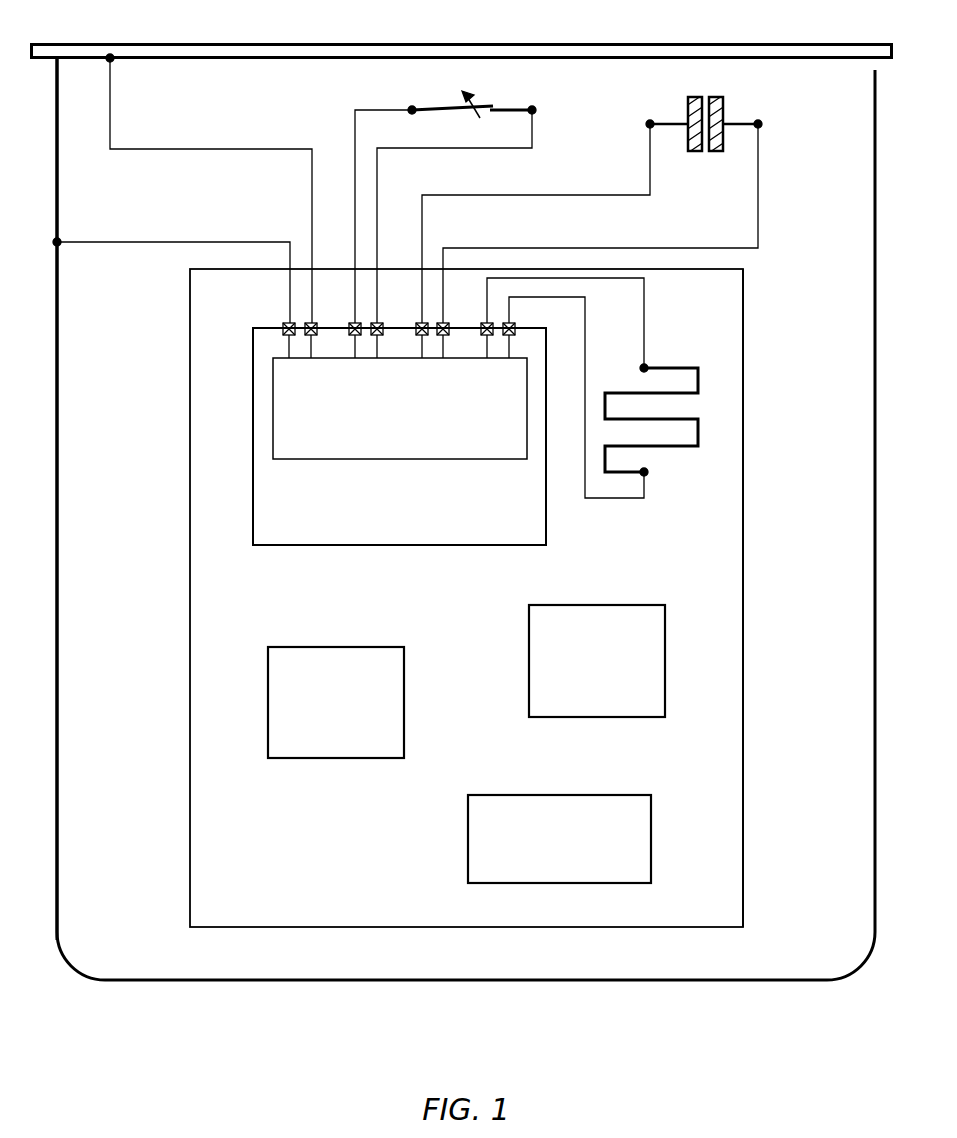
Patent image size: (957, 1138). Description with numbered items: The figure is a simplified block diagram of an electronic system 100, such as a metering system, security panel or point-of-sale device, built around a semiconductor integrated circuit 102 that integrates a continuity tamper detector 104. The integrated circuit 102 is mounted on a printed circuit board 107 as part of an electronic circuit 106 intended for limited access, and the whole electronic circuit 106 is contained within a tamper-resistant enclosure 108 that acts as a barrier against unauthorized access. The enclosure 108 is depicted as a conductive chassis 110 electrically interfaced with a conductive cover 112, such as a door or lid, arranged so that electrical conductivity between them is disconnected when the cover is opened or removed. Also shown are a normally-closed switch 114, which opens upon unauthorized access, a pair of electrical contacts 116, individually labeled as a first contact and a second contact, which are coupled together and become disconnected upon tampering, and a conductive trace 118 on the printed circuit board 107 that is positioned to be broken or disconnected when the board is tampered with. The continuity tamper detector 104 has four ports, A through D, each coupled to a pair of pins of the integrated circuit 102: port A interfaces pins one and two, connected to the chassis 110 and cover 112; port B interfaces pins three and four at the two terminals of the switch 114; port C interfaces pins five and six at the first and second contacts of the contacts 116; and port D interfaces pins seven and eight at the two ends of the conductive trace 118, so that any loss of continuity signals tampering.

The electronic system 100 is at (441, 29).
The integrated circuit 102 is at (389, 521).
The continuity tamper detector 104 is at (470, 447).
The electronic circuit 106 is at (785, 379).
The printed circuit board 107 is at (744, 540).
The enclosure 108 is at (149, 1006).
The conductive chassis 110 is at (58, 348).
The conductive cover 112 is at (695, 43).
The normally-closed switch 114 is at (428, 108).
The pair of electrical contacts 116 is at (666, 101).
The conductive trace 118 is at (664, 447).